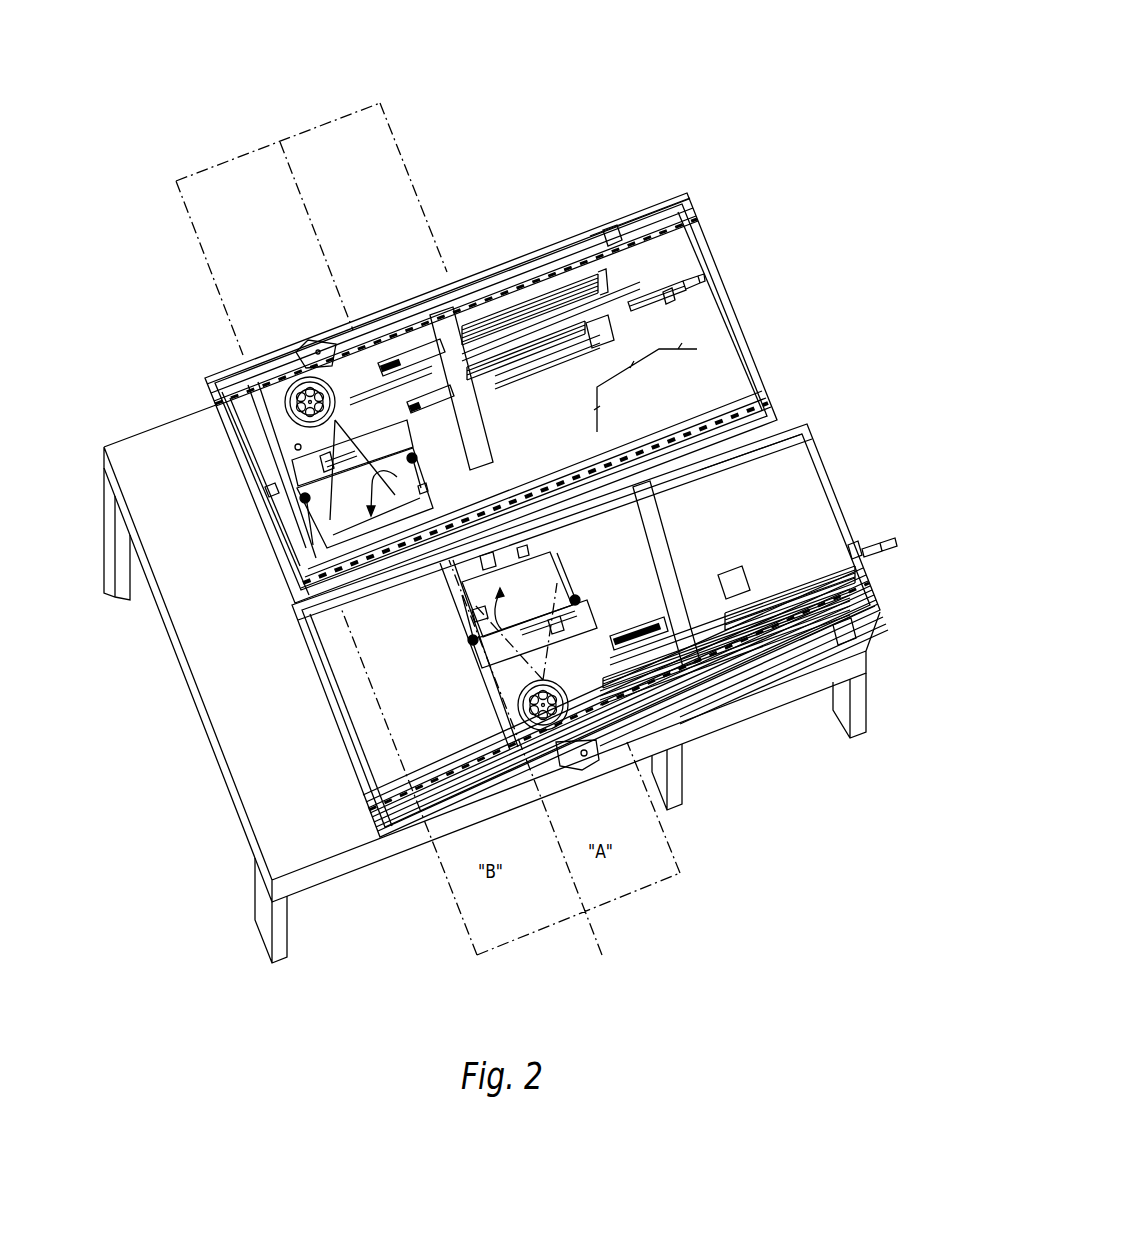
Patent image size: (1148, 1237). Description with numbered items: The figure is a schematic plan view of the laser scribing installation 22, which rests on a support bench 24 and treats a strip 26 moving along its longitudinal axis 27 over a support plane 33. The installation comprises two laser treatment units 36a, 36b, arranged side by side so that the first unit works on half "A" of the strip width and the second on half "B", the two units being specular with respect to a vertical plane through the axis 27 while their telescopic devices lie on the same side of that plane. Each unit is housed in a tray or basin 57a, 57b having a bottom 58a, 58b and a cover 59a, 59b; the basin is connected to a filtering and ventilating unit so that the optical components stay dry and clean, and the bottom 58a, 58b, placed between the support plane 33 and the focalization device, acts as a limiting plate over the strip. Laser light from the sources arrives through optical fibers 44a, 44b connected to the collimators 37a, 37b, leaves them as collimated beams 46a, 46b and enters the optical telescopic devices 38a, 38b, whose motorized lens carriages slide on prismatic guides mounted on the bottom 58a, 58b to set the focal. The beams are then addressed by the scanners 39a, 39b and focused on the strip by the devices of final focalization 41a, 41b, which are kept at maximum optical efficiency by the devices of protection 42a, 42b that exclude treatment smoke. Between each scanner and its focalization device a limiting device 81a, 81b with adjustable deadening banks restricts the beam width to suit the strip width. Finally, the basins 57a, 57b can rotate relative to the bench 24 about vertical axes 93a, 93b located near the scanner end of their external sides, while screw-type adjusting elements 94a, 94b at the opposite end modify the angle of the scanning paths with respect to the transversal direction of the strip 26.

The laser scribing installation 22 is at (795, 73).
The support bench 24 is at (143, 434).
The strip 26 is at (402, 210).
The longitudinal axis 27 is at (277, 127).
The support plane 33 is at (257, 462).
The laser treatment unit 36a is at (833, 432).
The laser treatment unit 36b is at (643, 180).
The collimator 37a is at (858, 545).
The collimator 37b is at (670, 303).
The optical telescopic device 38a is at (730, 563).
The optical telescopic device 38b is at (526, 390).
The scanner 39a is at (512, 708).
The scanner 39b is at (292, 380).
The device of final focalization 41a is at (468, 633).
The device of final focalization 41b is at (417, 470).
The device of protection 42a is at (436, 589).
The device of protection 42b is at (304, 557).
The optical fiber 44a is at (893, 545).
The optical fiber 44b is at (683, 276).
The collimated beam 46a is at (796, 578).
The collimated beam 46b is at (615, 300).
The tray or basin 57a is at (880, 610).
The tray or basin 57b is at (617, 225).
The bottom 58a is at (619, 587).
The bottom 58b is at (459, 455).
The cover 59a is at (793, 437).
The cover 59b is at (668, 403).
The limiting device 81a is at (468, 682).
The limiting device 81b is at (272, 489).
The vertical axis 93a is at (578, 752).
The vertical axis 93b is at (313, 342).
The adjusting element 94a is at (850, 636).
The adjusting element 94b is at (597, 235).